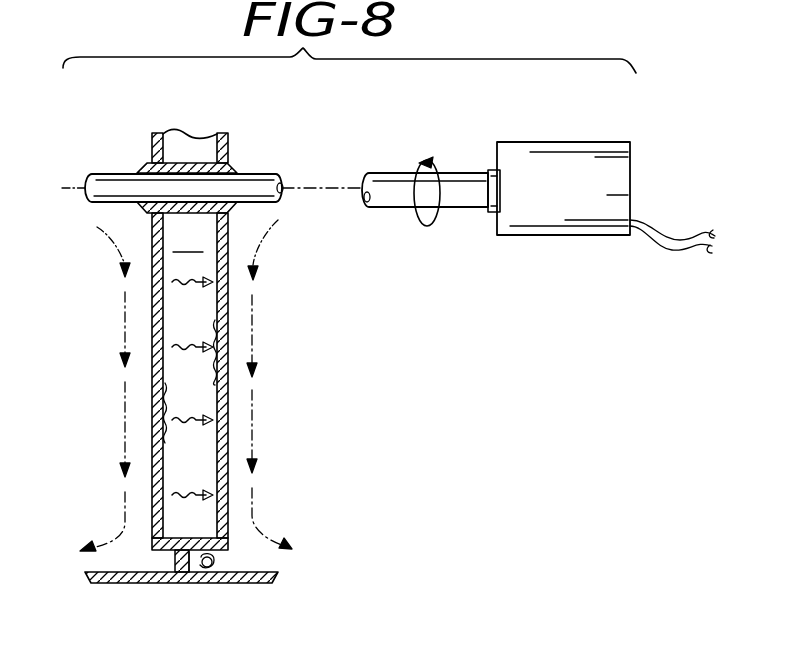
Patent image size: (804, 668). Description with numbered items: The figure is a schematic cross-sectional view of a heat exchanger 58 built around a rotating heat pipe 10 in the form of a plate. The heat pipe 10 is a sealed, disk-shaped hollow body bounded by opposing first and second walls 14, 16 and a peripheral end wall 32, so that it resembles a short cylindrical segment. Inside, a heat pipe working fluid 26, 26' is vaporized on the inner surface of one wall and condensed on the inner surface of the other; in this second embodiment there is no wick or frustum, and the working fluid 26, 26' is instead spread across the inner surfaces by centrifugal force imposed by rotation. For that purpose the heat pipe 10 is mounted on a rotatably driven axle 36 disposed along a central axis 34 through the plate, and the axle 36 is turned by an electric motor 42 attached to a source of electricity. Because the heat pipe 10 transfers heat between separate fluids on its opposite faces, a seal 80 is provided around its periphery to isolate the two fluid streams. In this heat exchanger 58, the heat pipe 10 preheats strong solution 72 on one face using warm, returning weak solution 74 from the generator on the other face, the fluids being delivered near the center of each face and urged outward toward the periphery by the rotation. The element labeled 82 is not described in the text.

The heat pipe 10 is at (368, 375).
The first wall 14 is at (150, 505).
The second wall 16 is at (233, 522).
The heat pipe working fluid 26 is at (126, 394).
The heat pipe working fluid 26' is at (189, 388).
The peripheral end wall 32 is at (167, 553).
The central axis 34 is at (74, 187).
The axle 36 is at (380, 173).
The electric motor 42 is at (607, 183).
The heat exchanger 58 is at (228, 540).
The strong solution 72 is at (280, 262).
The weak solution 74 is at (102, 252).
The seal 80 is at (207, 567).
The base plate 82 is at (267, 583).